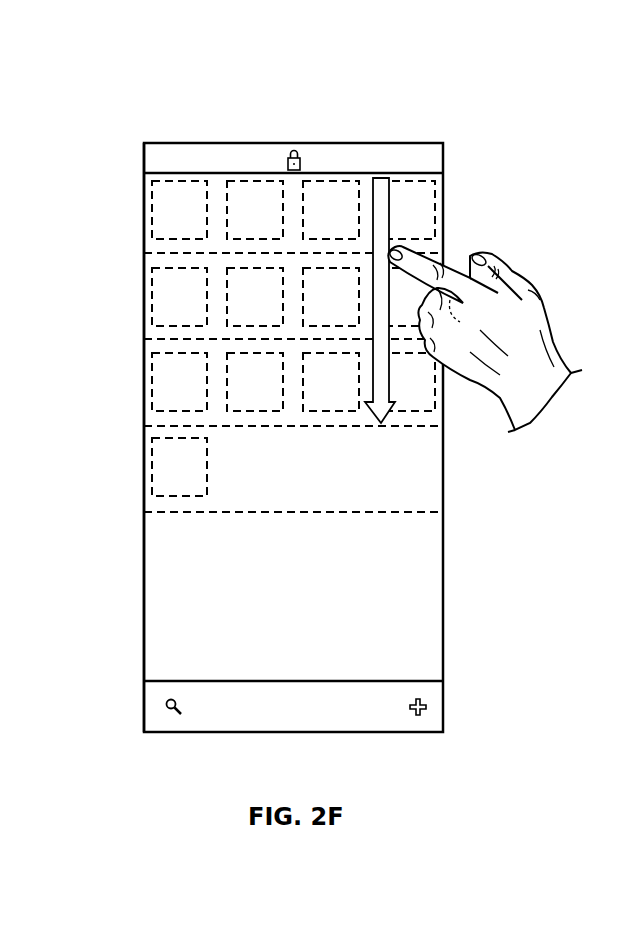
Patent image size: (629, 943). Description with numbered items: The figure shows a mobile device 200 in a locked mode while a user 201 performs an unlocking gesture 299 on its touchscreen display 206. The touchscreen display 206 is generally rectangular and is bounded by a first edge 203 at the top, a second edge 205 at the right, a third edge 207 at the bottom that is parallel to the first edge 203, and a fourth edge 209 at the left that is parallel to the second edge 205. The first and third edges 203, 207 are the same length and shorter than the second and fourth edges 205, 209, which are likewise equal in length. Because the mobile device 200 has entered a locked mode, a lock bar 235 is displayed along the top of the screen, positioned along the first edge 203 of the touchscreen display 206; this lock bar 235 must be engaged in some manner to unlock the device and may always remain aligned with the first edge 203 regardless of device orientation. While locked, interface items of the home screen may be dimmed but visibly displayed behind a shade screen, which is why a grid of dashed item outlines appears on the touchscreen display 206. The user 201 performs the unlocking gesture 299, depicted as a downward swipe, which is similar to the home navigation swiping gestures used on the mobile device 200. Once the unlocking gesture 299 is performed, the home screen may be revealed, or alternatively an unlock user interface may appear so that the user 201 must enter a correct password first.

The mobile device 200 is at (168, 48).
The user 201 is at (547, 307).
The first edge 203 is at (292, 142).
The second edge 205 is at (443, 557).
The touchscreen display 206 is at (430, 480).
The third edge 207 is at (283, 732).
The fourth edge 209 is at (145, 582).
The lock bar 235 is at (252, 153).
The unlocking gesture 299 is at (390, 232).